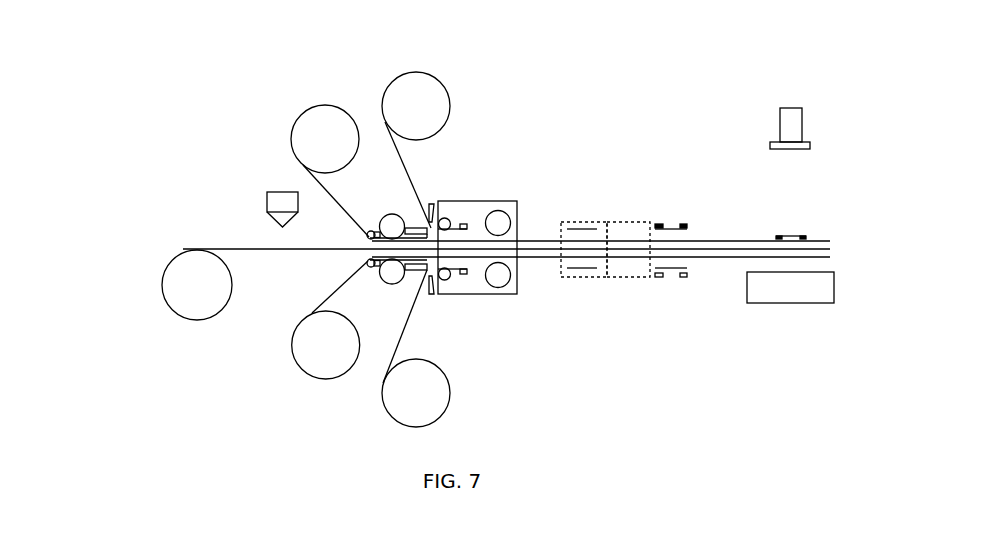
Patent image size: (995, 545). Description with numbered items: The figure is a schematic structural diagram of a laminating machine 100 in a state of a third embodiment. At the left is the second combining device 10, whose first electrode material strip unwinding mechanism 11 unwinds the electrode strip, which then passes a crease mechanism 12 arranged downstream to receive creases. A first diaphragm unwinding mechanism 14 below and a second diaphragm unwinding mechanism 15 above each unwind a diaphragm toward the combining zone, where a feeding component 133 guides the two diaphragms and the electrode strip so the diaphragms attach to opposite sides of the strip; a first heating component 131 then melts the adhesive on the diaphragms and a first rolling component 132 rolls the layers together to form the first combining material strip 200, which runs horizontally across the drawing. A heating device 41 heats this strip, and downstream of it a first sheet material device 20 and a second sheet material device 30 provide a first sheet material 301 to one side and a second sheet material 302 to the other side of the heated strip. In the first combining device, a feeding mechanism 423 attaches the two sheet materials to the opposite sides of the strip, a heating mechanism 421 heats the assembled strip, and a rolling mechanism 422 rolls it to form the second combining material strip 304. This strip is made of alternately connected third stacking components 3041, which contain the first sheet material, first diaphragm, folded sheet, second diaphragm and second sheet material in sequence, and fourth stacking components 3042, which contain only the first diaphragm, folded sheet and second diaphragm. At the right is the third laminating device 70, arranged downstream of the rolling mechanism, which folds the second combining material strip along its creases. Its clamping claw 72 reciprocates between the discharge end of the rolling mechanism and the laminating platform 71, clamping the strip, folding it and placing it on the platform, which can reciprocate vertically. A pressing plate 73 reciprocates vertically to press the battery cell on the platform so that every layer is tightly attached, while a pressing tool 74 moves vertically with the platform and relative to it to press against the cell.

The laminating machine 100 is at (52, 47).
The second combining device 10 is at (259, 233).
The first electrode material strip unwinding mechanism 11 is at (162, 283).
The crease mechanism 12 is at (267, 206).
The first diaphragm unwinding mechanism 14 is at (292, 352).
The second diaphragm unwinding mechanism 15 is at (291, 129).
The first heating component 131 is at (370, 267).
The first rolling component 132 is at (392, 284).
The feeding component 133 is at (369, 231).
The first sheet material device 20 is at (481, 372).
The second sheet material device 30 is at (469, 64).
The heating device 41 is at (393, 214).
The heating mechanism 421 is at (463, 276).
The rolling mechanism 422 is at (498, 210).
The feeding mechanism 423 is at (444, 218).
The first combining material strip 200 is at (728, 240).
The first sheet material 301 is at (578, 270).
The second sheet material 302 is at (590, 227).
The second combining material strip 304 is at (594, 196).
The third stacking component 3041 is at (565, 226).
The fourth stacking component 3042 is at (640, 279).
The clamping claw 72 is at (688, 279).
The third laminating device 70 is at (759, 196).
The laminating platform 71 is at (797, 303).
The pressing plate 73 is at (790, 108).
The pressing tool 74 is at (803, 237).